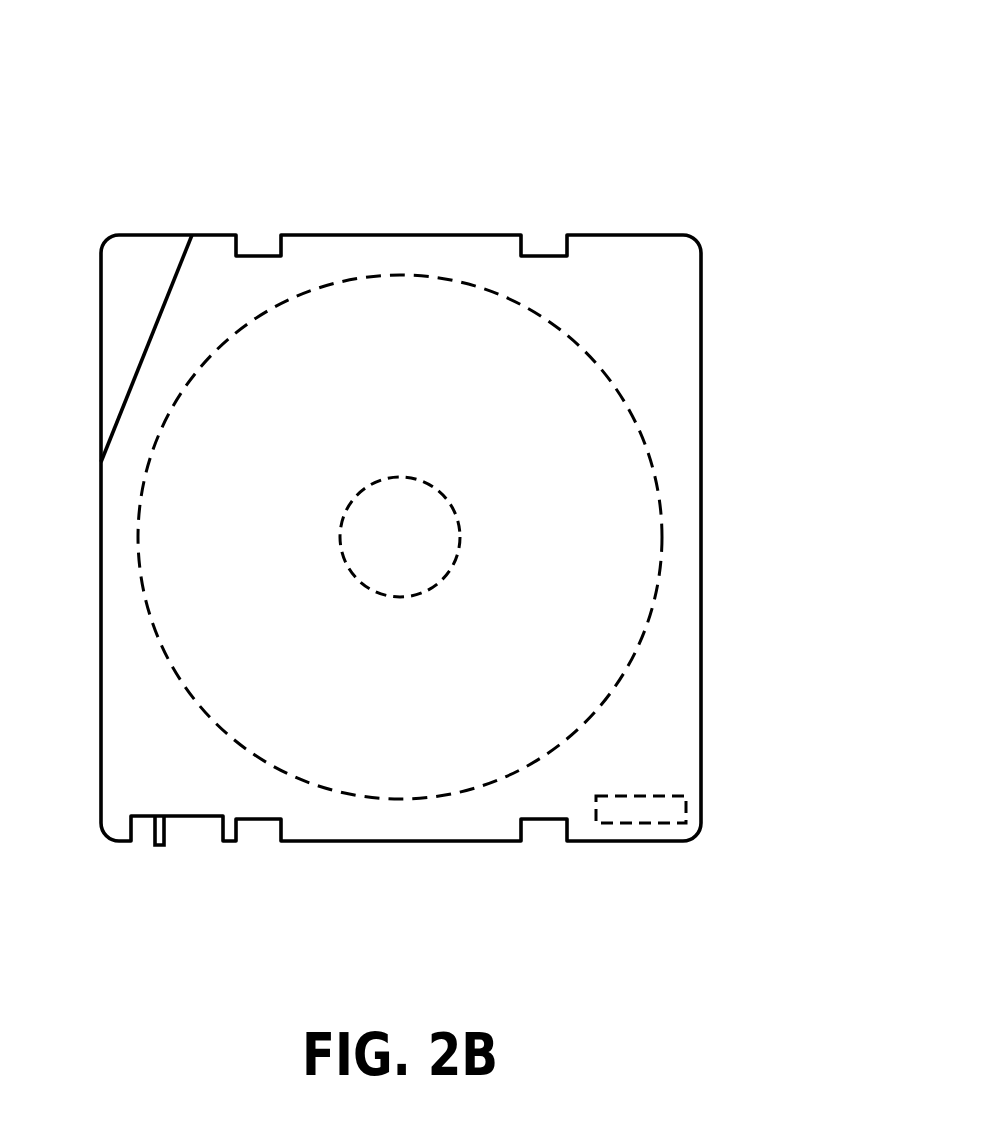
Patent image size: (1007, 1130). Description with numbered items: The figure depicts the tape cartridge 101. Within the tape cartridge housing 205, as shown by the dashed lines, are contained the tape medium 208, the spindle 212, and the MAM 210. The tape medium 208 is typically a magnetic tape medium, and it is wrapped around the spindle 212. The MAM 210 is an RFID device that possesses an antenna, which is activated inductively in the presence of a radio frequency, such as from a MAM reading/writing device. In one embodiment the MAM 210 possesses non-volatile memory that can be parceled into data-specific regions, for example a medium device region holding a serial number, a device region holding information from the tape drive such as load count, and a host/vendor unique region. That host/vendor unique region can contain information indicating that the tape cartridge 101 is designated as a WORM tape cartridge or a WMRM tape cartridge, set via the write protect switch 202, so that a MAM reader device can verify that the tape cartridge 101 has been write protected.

The tape cartridge 101 is at (453, 80).
The tape cartridge housing 205 is at (172, 235).
The tape medium 208 is at (432, 276).
The spindle 212 is at (460, 540).
The write protect switch 202 is at (160, 845).
The MAM 210 is at (641, 824).